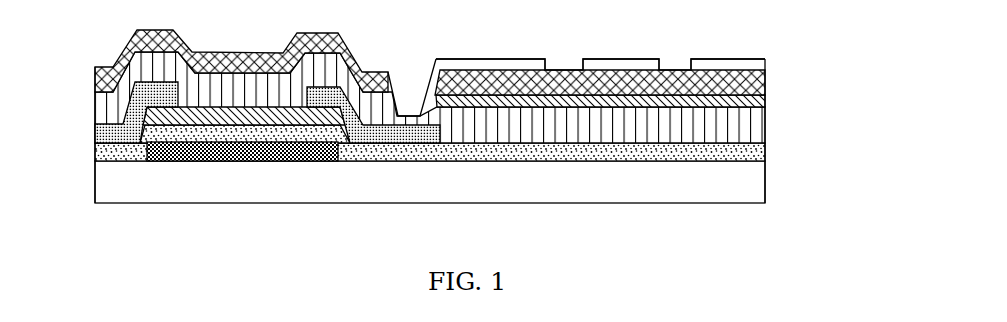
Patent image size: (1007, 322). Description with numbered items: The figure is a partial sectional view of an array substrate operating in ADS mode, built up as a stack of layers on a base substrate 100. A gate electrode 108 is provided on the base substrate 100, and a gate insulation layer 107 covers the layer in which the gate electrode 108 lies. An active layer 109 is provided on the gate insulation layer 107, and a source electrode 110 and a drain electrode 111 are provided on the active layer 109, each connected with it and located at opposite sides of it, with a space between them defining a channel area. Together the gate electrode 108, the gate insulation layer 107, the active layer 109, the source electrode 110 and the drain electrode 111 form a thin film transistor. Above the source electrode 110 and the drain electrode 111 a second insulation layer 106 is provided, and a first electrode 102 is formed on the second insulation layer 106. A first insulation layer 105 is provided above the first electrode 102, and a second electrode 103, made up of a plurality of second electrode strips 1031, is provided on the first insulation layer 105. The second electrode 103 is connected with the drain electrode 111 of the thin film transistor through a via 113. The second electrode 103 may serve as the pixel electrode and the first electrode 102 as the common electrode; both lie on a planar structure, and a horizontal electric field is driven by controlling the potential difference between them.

The base substrate 100 is at (757, 187).
The first electrode 102 is at (763, 98).
The second electrode 103 is at (645, 38).
The second electrode strips 1031 is at (632, 63).
The first insulation layer 105 is at (763, 82).
The second insulation layer 106 is at (763, 123).
The gate insulation layer 107 is at (757, 148).
The gate electrode 108 is at (266, 161).
The active layer 109 is at (207, 112).
The source electrode 110 is at (95, 134).
The drain electrode 111 is at (387, 138).
The via 113 is at (407, 88).